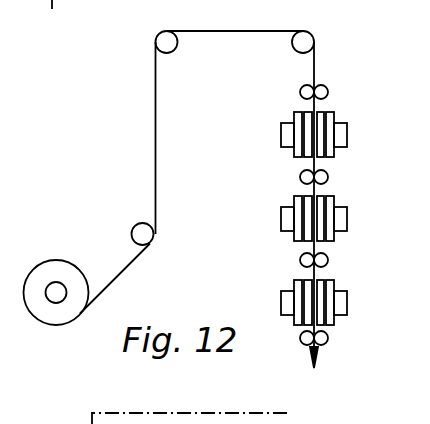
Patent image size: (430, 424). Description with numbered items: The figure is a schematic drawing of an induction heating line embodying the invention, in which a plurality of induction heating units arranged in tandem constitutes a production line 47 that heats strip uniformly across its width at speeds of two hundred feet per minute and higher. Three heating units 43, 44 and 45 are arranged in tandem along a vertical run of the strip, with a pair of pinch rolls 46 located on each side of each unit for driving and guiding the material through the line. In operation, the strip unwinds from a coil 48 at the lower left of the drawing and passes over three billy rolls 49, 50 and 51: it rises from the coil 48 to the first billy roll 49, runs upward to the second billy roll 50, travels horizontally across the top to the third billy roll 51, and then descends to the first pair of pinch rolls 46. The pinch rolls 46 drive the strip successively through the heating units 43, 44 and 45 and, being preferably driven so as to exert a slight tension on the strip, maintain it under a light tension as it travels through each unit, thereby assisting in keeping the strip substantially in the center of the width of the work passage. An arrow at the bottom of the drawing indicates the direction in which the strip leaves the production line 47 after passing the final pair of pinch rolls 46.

The heating unit 43 is at (347, 132).
The heating unit 44 is at (347, 219).
The heating unit 45 is at (347, 303).
The pinch rolls 46 is at (328, 91).
The production line 47 is at (238, 257).
The coil 48 is at (60, 262).
The billy roll 49 is at (131, 234).
The billy roll 50 is at (160, 33).
The billy roll 51 is at (306, 41).